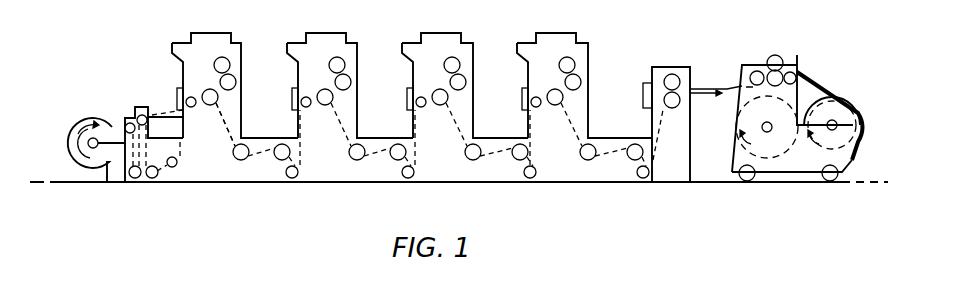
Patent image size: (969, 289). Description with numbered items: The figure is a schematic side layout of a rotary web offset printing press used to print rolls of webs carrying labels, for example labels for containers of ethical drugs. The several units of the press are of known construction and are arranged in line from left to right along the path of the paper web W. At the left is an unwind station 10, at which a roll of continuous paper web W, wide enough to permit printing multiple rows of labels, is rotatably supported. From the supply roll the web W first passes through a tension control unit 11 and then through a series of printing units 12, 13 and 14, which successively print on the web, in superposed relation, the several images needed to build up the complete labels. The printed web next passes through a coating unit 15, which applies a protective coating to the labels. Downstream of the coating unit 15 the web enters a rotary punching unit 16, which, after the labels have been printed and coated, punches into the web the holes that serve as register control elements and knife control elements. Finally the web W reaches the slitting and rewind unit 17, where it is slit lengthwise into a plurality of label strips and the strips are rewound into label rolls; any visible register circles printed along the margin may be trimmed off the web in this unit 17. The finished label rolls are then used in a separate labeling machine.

The unwind station 10 is at (80, 117).
The tension control unit 11 is at (131, 104).
The printing unit 12 is at (235, 13).
The printing unit 13 is at (349, 13).
The printing unit 14 is at (464, 13).
The coating unit 15 is at (574, 30).
The punching unit 16 is at (677, 62).
The slitting and rewind unit 17 is at (799, 54).
The paper web W is at (267, 145).